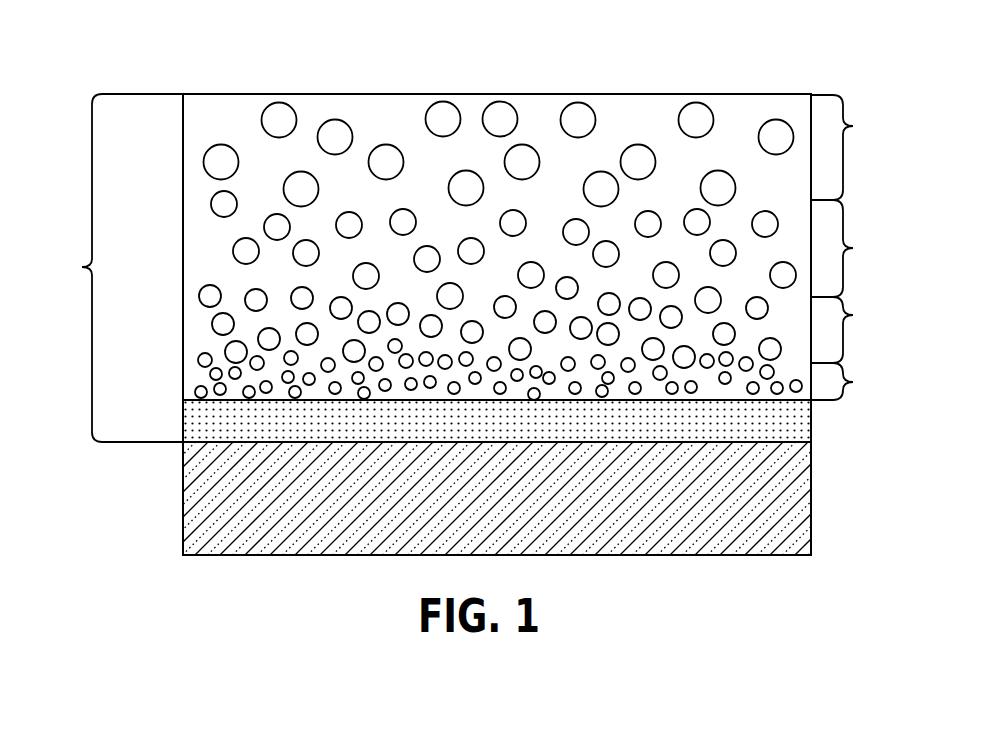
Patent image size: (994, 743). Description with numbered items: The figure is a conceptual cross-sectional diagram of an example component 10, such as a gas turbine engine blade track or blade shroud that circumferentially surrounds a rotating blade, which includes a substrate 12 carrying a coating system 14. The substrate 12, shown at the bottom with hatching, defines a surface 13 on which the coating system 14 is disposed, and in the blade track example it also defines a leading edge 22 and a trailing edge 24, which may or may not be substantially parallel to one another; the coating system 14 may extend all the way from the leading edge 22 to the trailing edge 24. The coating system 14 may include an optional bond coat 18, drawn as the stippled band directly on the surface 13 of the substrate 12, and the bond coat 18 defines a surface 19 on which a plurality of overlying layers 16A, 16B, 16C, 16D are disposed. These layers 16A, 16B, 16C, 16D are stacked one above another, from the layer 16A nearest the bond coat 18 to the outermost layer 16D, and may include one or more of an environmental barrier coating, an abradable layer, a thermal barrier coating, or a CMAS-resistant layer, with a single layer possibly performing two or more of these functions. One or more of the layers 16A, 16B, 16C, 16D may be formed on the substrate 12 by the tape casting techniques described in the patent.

The component 10 is at (90, 56).
The substrate 12 is at (183, 545).
The surface 13 is at (780, 445).
The coating system 14 is at (113, 268).
The layer 16A is at (549, 378).
The layer 16B is at (551, 328).
The layer 16C is at (551, 250).
The layer 16D is at (555, 151).
The bond coat 18 is at (183, 437).
The surface 19 is at (795, 402).
The leading edge 22 is at (176, 182).
The trailing edge 24 is at (816, 172).